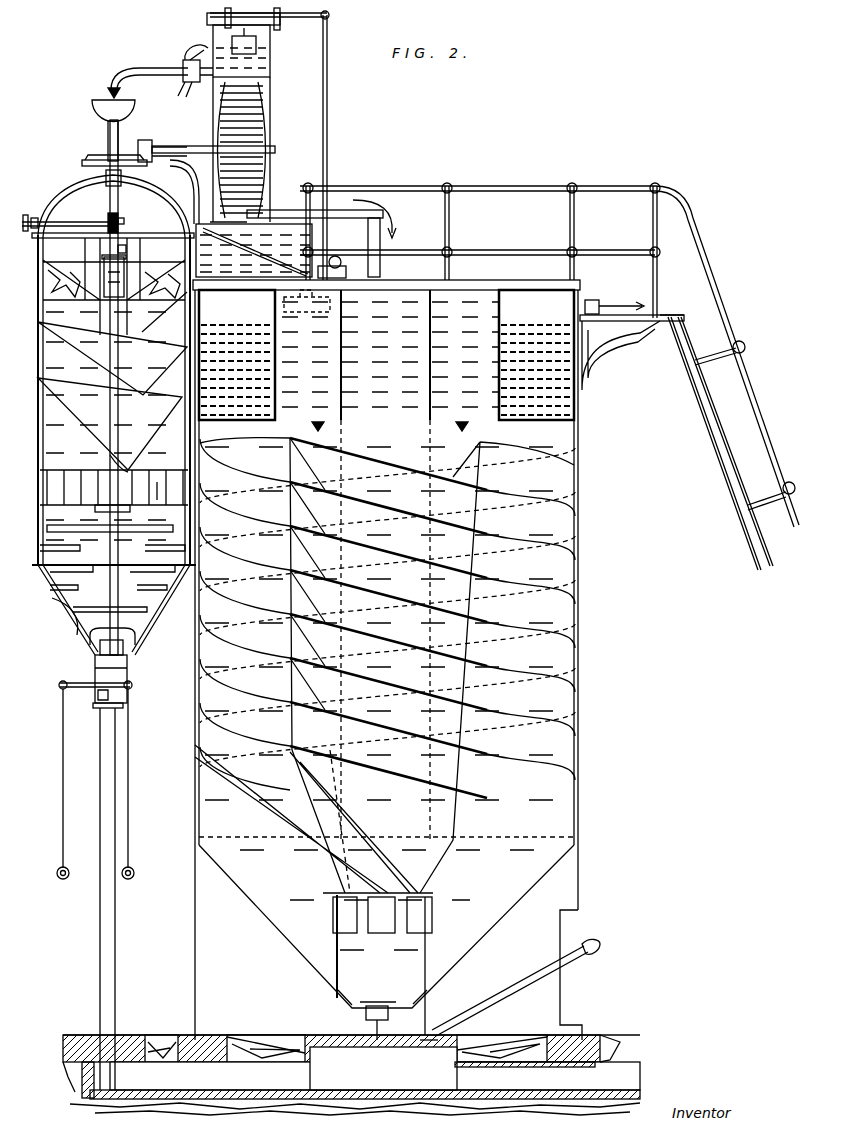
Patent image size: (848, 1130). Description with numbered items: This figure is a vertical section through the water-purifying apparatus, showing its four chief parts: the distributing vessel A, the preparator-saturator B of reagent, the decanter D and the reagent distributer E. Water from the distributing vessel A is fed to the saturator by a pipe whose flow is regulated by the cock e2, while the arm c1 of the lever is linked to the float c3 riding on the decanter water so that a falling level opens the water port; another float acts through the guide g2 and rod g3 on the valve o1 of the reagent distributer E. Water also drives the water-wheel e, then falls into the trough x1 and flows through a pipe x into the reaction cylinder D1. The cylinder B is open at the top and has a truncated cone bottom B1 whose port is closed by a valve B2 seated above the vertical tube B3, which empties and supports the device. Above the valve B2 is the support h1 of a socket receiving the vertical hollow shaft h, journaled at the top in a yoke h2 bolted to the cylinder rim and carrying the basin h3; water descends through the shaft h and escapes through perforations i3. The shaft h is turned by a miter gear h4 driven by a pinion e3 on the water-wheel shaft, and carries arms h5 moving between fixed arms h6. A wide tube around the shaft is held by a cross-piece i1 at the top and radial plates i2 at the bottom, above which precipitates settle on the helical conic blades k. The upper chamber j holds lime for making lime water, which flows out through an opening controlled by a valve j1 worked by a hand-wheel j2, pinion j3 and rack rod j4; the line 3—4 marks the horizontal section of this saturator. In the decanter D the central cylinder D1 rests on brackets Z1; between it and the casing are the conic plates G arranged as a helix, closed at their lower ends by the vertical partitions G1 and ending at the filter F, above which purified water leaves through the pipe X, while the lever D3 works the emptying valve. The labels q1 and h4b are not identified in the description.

The decanter D is at (392, 660).
The concentric cylinder (cylinder of reaction) D1 is at (382, 450).
The lever D3 is at (510, 989).
The filter F is at (245, 392).
The float c3 is at (307, 295).
The brackets Z1 is at (387, 656).
The conic plates G is at (387, 618).
The vertical partitions G1 is at (353, 897).
The pipe X is at (615, 299).
The rod g3 is at (327, 135).
The distributing vessel A is at (248, 45).
The pin q1 is at (241, 31).
The guide g2 is at (279, 28).
The water-wheel e is at (245, 130).
The reagent distributer E is at (241, 218).
The trough x1 is at (255, 218).
The pipe x is at (365, 215).
The valve o1 is at (342, 264).
The arm c1 is at (160, 73).
The cock e2 is at (195, 71).
The basin h3 is at (122, 130).
The miter gear h4 is at (100, 158).
The pinion e3 is at (148, 142).
The cylinder of the mixing device (preparator-saturator) B is at (104, 370).
The yoke h2 is at (102, 182).
The hand-wheel j2 is at (66, 209).
The chamber j is at (165, 266).
The cross-piece i1 is at (158, 250).
The pinion j3 is at (120, 222).
The rack rod j4 is at (122, 252).
The valve j1 is at (113, 316).
The helical conic blades k is at (112, 382).
The section line 3 is at (190, 487).
The section line 4 is at (230, 490).
The radial plates i2 is at (160, 482).
The arms h5 is at (148, 527).
The support h1 is at (72, 656).
The vertical hollow shaft h is at (118, 552).
The truncated cone bottom B1 is at (114, 610).
The plate h4b is at (90, 606).
The fixed arms h6 is at (160, 608).
The perforations i3 is at (126, 645).
The valve B2 is at (130, 664).
The vertical tube B3 is at (104, 740).